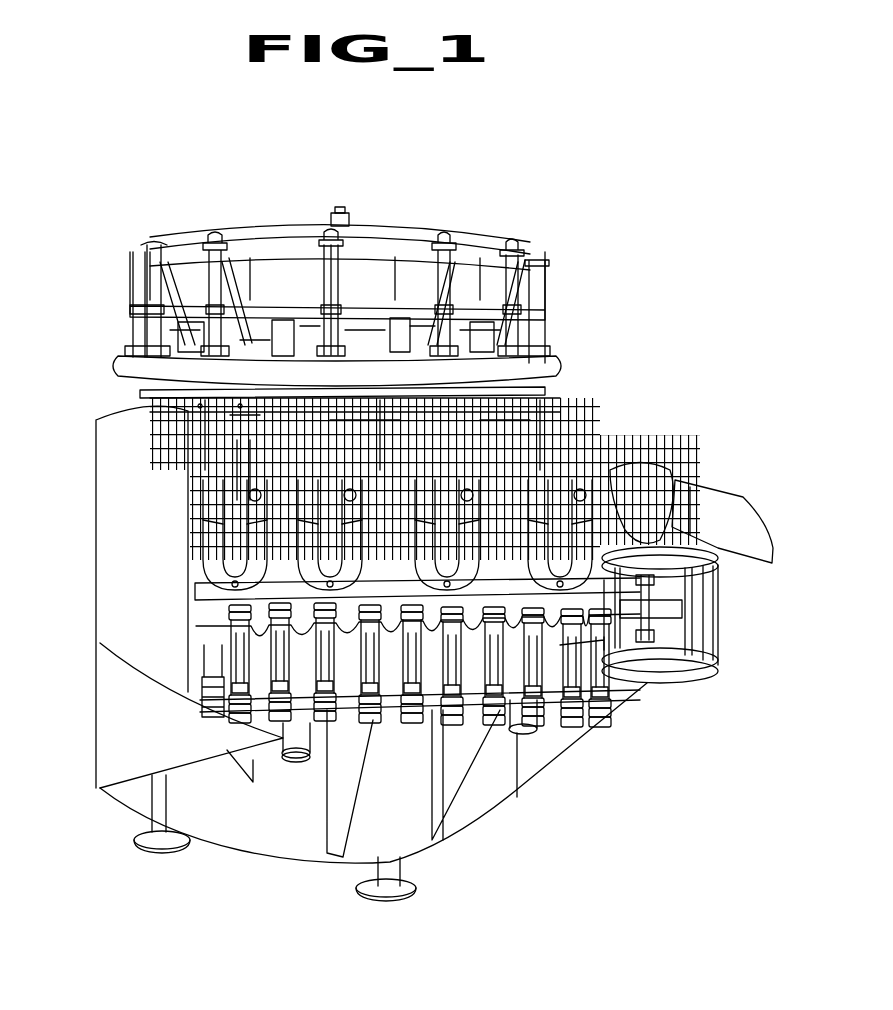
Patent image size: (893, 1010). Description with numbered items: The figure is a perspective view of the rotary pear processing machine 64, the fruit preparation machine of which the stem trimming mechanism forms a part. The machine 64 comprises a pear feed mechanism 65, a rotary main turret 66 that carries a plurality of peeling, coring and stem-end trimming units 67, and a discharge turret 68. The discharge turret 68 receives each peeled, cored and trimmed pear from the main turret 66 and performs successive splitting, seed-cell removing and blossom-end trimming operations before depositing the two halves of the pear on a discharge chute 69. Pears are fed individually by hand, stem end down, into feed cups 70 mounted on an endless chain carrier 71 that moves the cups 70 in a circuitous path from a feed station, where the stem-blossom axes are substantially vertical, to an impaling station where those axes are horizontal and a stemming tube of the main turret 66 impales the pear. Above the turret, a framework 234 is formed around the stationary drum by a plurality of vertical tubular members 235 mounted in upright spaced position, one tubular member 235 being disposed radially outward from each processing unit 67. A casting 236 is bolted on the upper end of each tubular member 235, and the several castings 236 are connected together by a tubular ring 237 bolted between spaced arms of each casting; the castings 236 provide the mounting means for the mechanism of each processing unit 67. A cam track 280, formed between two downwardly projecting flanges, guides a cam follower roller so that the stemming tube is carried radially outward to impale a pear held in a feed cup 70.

The rotary pear processing machine 64 is at (613, 280).
The pear feed mechanism 65 is at (187, 557).
The rotary main turret 66 is at (560, 363).
The peeling, coring and stem-end trimming units 67 is at (533, 412).
The discharge turret 68 is at (688, 425).
The discharge chute 69 is at (720, 512).
The feed cups 70 is at (604, 434).
The endless chain carrier 71 is at (200, 718).
The framework 234 is at (140, 392).
The vertical tubular members 235 is at (237, 470).
The casting 236 is at (550, 383).
The tubular ring 237 is at (130, 358).
The cam track 280 is at (357, 303).